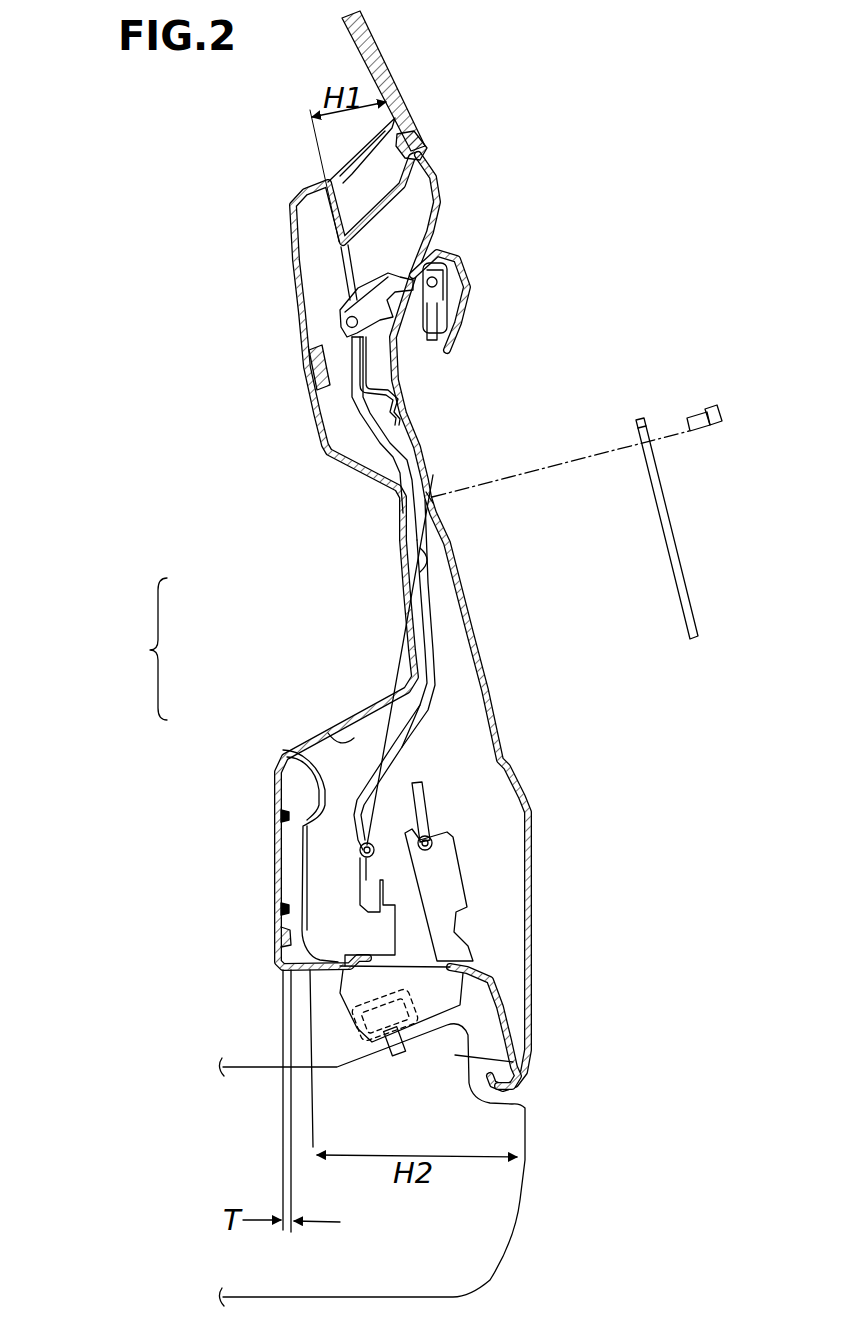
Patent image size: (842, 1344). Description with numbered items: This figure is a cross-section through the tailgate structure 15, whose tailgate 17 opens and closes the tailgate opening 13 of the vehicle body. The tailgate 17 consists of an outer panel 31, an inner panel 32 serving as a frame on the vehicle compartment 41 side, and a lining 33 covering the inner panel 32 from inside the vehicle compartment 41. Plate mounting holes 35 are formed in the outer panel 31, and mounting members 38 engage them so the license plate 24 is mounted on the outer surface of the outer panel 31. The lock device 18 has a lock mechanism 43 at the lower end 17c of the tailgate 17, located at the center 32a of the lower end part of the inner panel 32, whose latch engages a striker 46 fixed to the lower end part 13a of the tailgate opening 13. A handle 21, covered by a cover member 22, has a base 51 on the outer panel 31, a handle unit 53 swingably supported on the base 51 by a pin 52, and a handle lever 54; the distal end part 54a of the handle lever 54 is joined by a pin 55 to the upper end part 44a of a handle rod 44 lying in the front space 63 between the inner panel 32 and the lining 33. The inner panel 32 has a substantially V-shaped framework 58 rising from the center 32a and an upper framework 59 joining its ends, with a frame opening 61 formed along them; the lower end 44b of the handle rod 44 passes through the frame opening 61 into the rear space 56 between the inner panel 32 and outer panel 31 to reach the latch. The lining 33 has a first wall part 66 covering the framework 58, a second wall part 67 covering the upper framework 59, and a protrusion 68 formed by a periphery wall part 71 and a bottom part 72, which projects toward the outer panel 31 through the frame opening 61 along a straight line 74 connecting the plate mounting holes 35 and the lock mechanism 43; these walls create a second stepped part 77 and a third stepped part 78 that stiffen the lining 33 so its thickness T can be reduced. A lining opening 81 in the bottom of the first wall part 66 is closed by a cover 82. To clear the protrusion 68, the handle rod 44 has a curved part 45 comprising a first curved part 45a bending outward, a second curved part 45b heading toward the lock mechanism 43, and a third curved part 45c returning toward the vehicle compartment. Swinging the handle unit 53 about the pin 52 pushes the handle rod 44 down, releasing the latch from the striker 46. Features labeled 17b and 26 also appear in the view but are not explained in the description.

The tailgate opening 13 is at (533, 1104).
The lower end part of the tailgate opening 13a is at (519, 1067).
The tailgate structure 15 is at (535, 176).
The tailgate 17 is at (435, 450).
The glass lip of weatherstrip 17b is at (423, 160).
The lower end of the tailgate 17c is at (530, 1032).
The lock device 18 is at (482, 840).
The handle 21 is at (470, 285).
The cover member 22 is at (466, 300).
The license plate 24 is at (681, 582).
The window glass 26 is at (393, 55).
The outer panel 31 is at (472, 662).
The inner panel 32 is at (357, 216).
The center of the lower end part of the inner panel 32a is at (473, 962).
The lining 33 is at (318, 432).
The plate mounting holes 35 is at (438, 496).
The mounting members 38 is at (692, 416).
The vehicle compartment 41 is at (60, 511).
The lock mechanism 43 is at (462, 897).
The handle rod 44 is at (435, 606).
The upper end part of the handle rod 44a is at (350, 355).
The lower end of the handle rod 44b is at (283, 822).
The curved part 45 is at (428, 440).
The first curved part 45a is at (410, 365).
The second curved part 45b is at (428, 733).
The third curved part 45c is at (360, 904).
The striker 46 is at (348, 1012).
The base 51 is at (360, 273).
The pin 52 is at (453, 258).
The handle unit 53 is at (452, 330).
The handle lever 54 is at (343, 303).
The distal end part of the handle lever 54a is at (347, 327).
The pin 55 is at (345, 335).
The rear space 56 is at (469, 764).
The framework 58 is at (275, 908).
The upper framework 59 is at (350, 255).
The frame opening 61 is at (278, 755).
The front space 63 is at (365, 450).
The first wall part 66 is at (277, 781).
The second wall part 67 is at (294, 243).
The protrusion 68 is at (138, 649).
The periphery wall part 71 is at (322, 730).
The bottom part 72 is at (430, 568).
The straight line 74 is at (400, 663).
The second stepped part 77 is at (376, 482).
The third stepped part 78 is at (377, 707).
The lining opening 81 is at (277, 868).
The cover 82 is at (275, 930).